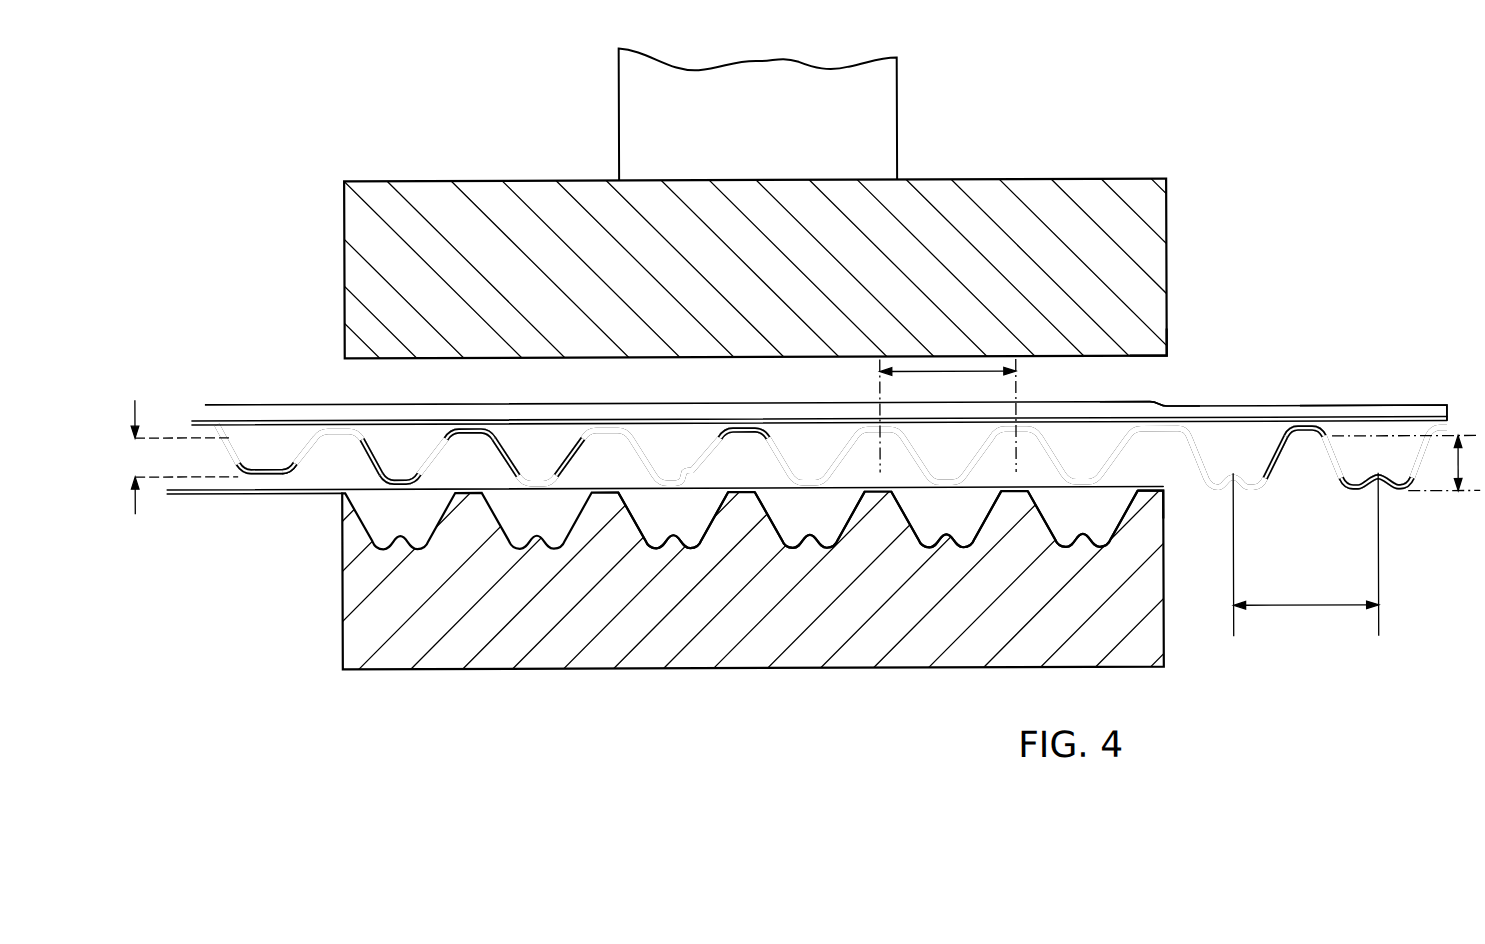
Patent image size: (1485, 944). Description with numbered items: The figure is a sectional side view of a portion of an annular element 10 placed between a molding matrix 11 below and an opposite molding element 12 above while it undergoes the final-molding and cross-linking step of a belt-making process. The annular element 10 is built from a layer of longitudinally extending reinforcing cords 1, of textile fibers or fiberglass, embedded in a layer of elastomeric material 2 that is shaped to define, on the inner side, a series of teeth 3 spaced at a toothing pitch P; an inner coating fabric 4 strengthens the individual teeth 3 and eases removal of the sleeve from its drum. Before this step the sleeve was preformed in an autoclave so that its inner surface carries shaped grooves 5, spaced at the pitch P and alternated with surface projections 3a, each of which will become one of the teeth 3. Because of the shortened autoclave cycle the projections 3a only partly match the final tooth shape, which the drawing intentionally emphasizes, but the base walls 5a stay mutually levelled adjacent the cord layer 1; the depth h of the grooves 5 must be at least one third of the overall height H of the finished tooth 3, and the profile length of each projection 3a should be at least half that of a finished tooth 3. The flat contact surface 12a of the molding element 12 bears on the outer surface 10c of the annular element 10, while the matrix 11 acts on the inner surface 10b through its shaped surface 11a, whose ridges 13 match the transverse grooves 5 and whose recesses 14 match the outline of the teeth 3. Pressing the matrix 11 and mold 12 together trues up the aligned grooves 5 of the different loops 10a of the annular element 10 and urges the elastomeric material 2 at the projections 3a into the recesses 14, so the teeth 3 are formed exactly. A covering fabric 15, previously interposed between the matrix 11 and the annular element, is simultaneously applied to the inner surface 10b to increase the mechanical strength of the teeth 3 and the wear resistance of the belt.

The reinforcing cords 1 is at (196, 421).
The elastomeric material 2 is at (280, 444).
The tooth 3 is at (1385, 492).
The surface projection 3a is at (268, 486).
The inner coating fabric 4 is at (287, 483).
The shaped groove 5 is at (337, 455).
The base wall 5a is at (469, 442).
The annular element 10 is at (227, 352).
The loop 10a is at (1406, 392).
The inner surface 10b is at (1298, 482).
The outer surface 10c is at (1140, 385).
The molding matrix 11 is at (371, 673).
The shaped surface 11a is at (1158, 470).
The molding element 12 is at (1118, 172).
The flat contact surface 12a is at (1133, 357).
The ridge 13 is at (851, 513).
The recess 14 is at (686, 528).
The covering fabric 15 is at (180, 497).
The groove depth h is at (182, 457).
The overall tooth height H is at (1408, 463).
The toothing pitch P is at (959, 376).